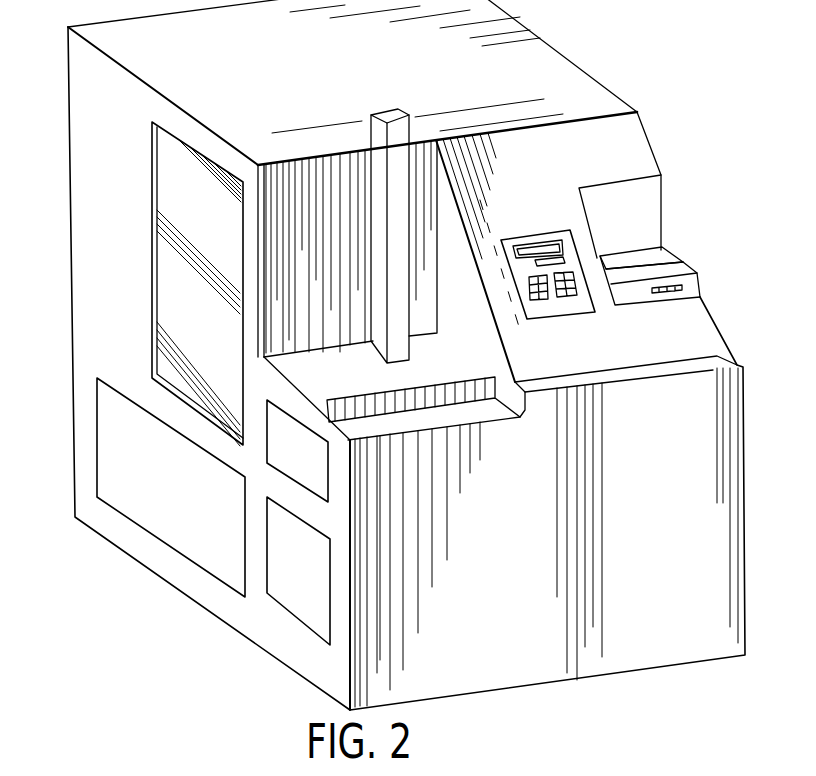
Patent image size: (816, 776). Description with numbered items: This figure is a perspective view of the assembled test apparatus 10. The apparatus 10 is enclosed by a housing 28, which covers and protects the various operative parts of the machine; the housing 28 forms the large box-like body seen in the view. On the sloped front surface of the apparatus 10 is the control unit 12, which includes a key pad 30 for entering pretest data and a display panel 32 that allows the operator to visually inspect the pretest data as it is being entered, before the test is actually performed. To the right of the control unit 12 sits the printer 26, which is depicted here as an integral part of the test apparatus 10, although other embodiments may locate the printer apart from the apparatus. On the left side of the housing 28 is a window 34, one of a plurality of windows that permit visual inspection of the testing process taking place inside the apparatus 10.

The apparatus 10 is at (587, 54).
The control unit 12 is at (555, 230).
The printer 26 is at (671, 258).
The housing 28 is at (279, 48).
The key pad 30 is at (571, 297).
The display panel 32 is at (520, 247).
The window 34 is at (150, 243).